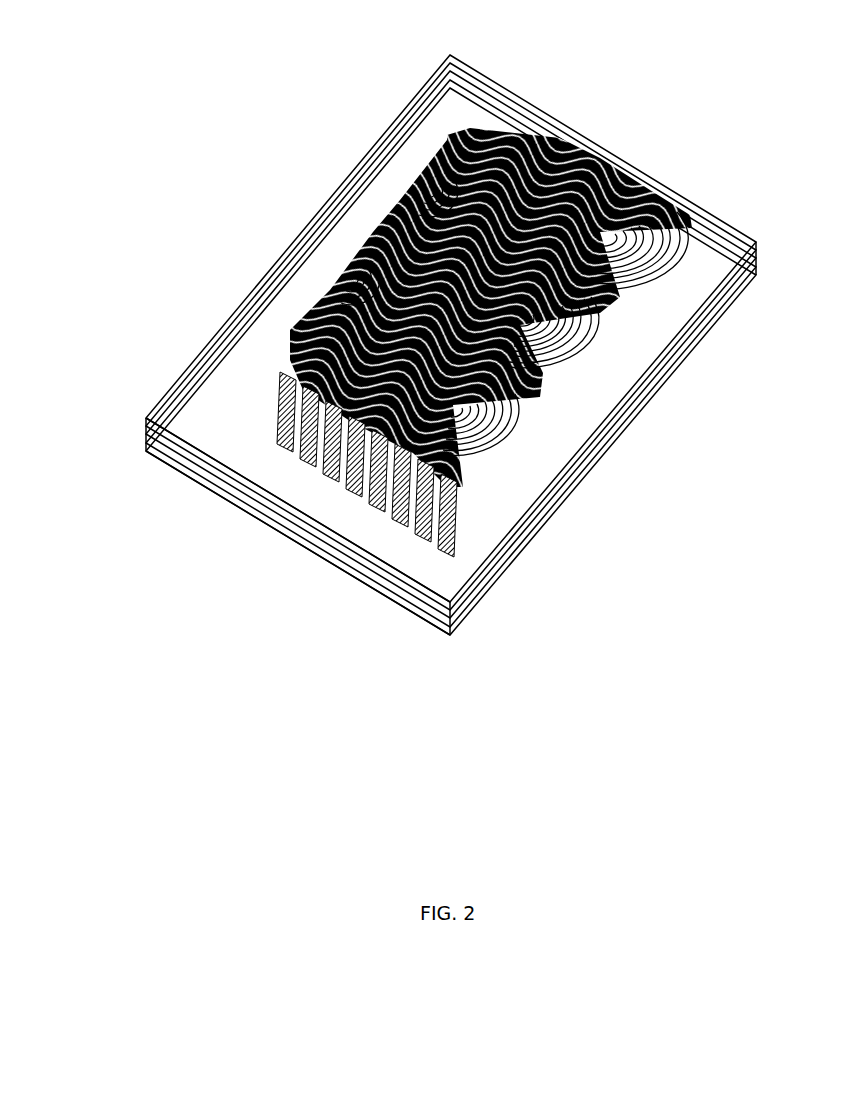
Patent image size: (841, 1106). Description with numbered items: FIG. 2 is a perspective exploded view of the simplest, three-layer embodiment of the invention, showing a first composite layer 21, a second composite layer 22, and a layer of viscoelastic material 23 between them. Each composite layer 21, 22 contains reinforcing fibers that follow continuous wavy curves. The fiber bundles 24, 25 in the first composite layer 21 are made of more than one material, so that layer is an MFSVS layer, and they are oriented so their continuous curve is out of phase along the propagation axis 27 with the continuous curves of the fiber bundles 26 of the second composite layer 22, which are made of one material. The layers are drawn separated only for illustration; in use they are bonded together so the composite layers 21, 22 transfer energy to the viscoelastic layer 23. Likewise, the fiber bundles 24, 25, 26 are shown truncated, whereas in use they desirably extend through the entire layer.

The first composite layer 21 is at (145, 423).
The second composite layer 22 is at (200, 487).
The layer of viscoelastic material 23 is at (146, 436).
The fiber bundle 24 is at (432, 497).
The fiber bundle 25 is at (398, 513).
The fiber bundles 26 is at (498, 128).
The propagation axis 27 is at (593, 153).